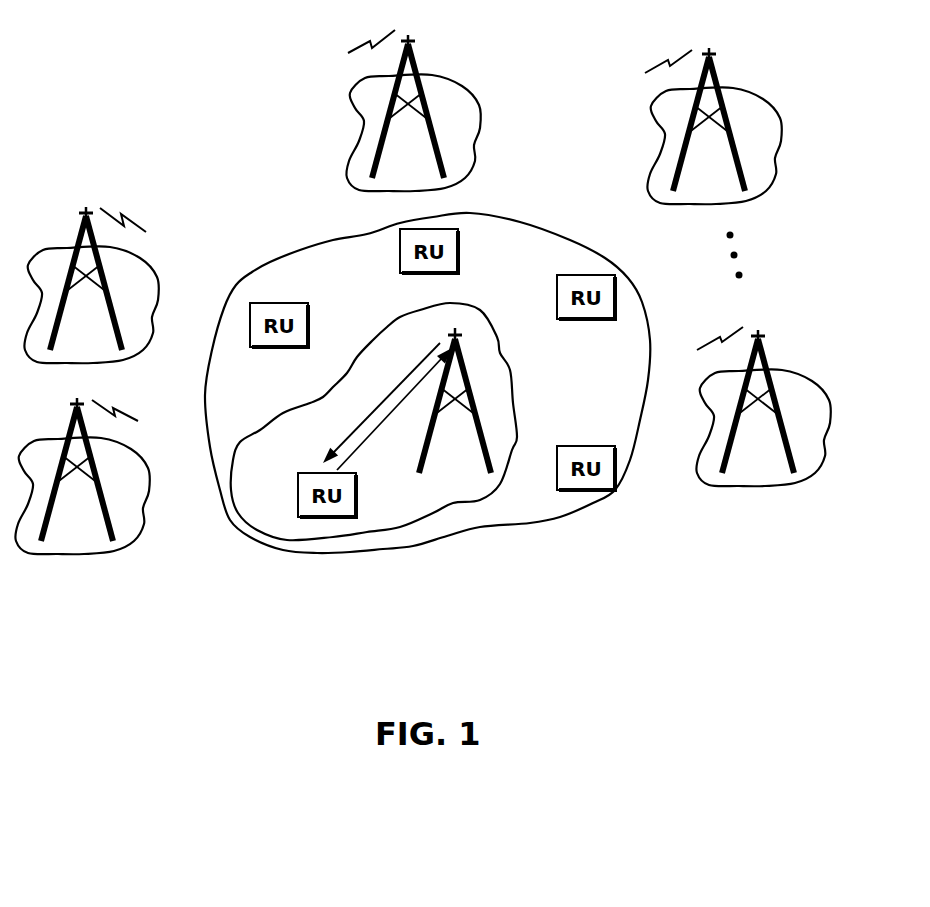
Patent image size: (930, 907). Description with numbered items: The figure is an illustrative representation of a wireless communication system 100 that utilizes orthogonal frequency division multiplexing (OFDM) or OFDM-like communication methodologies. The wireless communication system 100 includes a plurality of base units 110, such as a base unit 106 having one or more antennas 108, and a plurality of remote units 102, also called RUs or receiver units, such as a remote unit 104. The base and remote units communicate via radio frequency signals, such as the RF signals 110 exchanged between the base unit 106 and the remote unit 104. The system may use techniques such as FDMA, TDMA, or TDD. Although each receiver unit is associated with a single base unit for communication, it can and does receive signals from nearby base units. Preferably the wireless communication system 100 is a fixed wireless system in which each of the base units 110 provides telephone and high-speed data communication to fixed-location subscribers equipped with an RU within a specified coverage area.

The wireless communication system 100 is at (581, 584).
The remote units 102 is at (427, 383).
The remote unit 104 is at (297, 503).
The base unit 106 is at (467, 381).
The antennas 108 is at (463, 331).
The base units 110 is at (370, 413).